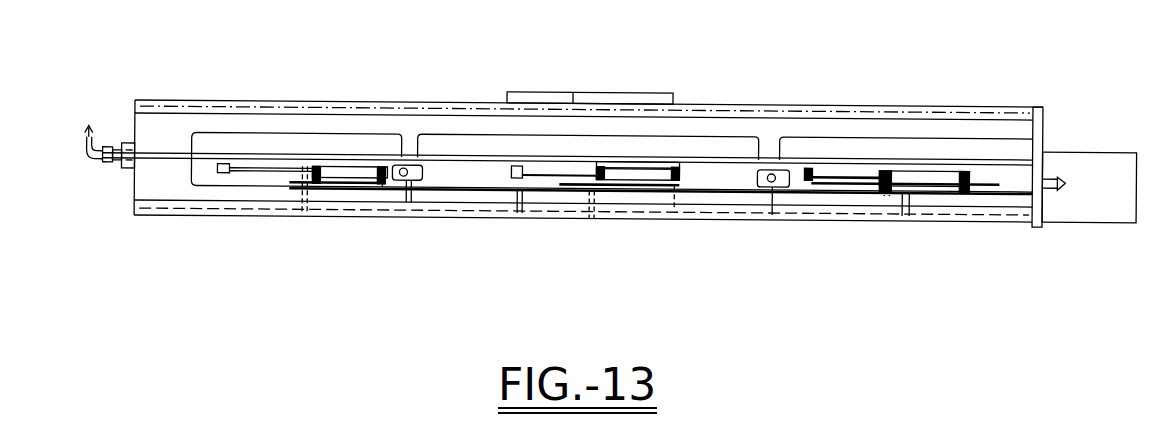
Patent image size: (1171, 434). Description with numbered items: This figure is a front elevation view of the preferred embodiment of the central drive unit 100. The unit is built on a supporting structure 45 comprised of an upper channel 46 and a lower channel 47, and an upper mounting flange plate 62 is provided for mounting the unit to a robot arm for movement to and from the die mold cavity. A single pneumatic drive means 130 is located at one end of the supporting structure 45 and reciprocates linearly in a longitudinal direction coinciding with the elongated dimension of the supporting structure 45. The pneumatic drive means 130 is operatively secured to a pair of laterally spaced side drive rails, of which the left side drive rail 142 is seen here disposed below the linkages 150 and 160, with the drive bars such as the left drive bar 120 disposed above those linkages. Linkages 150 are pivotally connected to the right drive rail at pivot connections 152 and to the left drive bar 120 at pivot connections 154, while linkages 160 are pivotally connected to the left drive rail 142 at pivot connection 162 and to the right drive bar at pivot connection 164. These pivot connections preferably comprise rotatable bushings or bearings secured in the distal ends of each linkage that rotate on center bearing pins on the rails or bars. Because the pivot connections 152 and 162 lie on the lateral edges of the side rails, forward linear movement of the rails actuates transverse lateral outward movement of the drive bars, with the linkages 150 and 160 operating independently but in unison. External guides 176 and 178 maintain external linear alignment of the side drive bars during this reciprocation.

The supporting structure 45 is at (135, 118).
The upper channel 46 is at (205, 100).
The lower channel 47 is at (855, 222).
The upper mounting flange plate 62 is at (612, 92).
The central drive unit 100 is at (962, 82).
The left drive bar 120 is at (437, 158).
The pneumatic drive means 130 is at (1058, 190).
The left side drive rail 142 is at (493, 187).
The linkages 150 is at (258, 168).
The pivot connections 152 is at (592, 218).
The pivot connections 154 is at (226, 172).
The linkages 160 is at (327, 165).
The pivot connection 162 is at (384, 163).
The pivot connection 164 is at (305, 165).
The external guide 176 is at (408, 178).
The external guide 178 is at (772, 185).